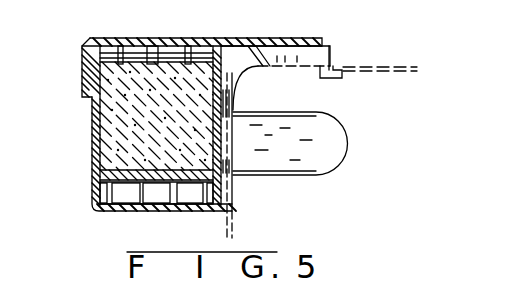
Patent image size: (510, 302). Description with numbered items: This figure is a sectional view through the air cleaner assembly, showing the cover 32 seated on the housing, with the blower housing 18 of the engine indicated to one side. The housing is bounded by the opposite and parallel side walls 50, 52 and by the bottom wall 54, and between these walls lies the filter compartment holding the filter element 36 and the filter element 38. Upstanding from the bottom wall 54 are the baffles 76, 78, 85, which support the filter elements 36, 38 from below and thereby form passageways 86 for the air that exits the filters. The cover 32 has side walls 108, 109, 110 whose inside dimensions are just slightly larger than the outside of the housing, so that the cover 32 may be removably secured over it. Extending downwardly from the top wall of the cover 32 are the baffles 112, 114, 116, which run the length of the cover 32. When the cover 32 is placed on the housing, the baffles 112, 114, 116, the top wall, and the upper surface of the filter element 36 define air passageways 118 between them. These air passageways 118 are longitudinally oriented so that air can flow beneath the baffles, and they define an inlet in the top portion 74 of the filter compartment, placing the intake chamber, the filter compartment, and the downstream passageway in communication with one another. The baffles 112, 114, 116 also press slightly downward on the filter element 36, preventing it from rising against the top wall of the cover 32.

The blower housing 18 is at (382, 68).
The cover 32 is at (309, 38).
The filter element 36 is at (168, 149).
The filter element 38 is at (98, 150).
The side wall 50 is at (97, 133).
The side wall 52 is at (222, 184).
The bottom wall 54 is at (117, 212).
The top portion 74 is at (100, 90).
The baffle 76 is at (183, 197).
The baffle 78 is at (147, 192).
The baffle 85 is at (108, 185).
The passageways 86 is at (150, 174).
The side wall 108 is at (80, 45).
The side wall 109 is at (244, 75).
The side wall 110 is at (324, 50).
The baffle 112 is at (120, 50).
The baffle 114 is at (164, 74).
The baffle 116 is at (190, 67).
The air passageways 118 is at (130, 68).